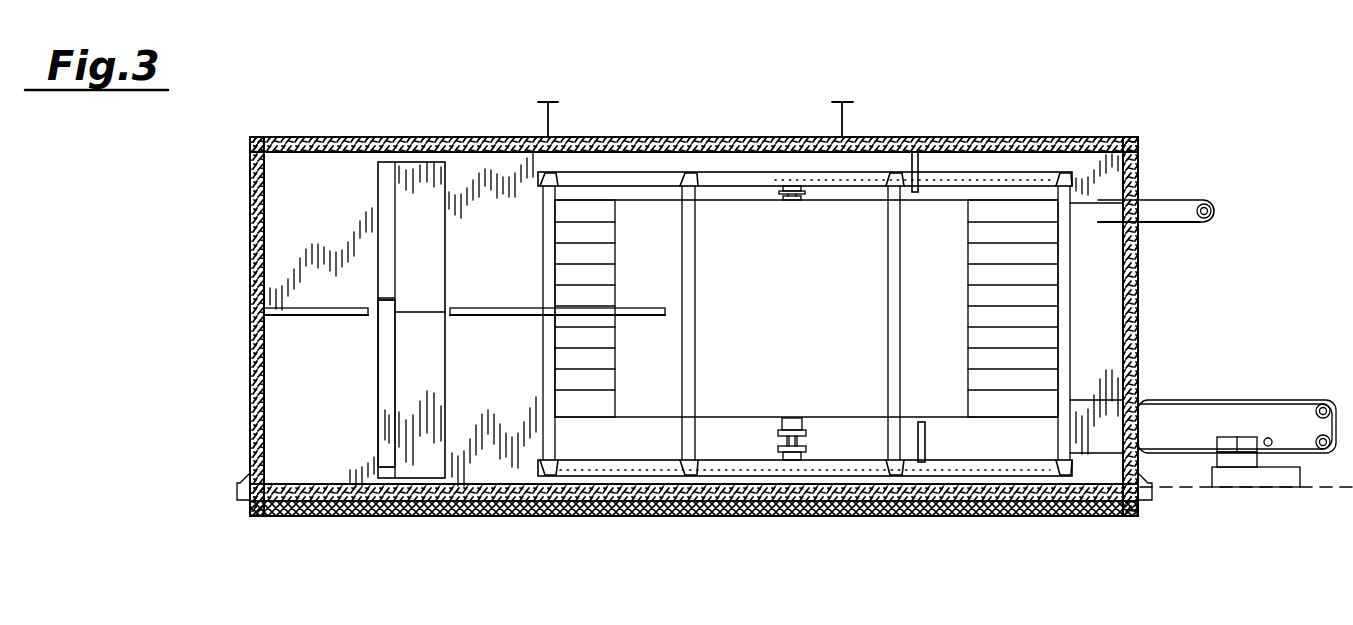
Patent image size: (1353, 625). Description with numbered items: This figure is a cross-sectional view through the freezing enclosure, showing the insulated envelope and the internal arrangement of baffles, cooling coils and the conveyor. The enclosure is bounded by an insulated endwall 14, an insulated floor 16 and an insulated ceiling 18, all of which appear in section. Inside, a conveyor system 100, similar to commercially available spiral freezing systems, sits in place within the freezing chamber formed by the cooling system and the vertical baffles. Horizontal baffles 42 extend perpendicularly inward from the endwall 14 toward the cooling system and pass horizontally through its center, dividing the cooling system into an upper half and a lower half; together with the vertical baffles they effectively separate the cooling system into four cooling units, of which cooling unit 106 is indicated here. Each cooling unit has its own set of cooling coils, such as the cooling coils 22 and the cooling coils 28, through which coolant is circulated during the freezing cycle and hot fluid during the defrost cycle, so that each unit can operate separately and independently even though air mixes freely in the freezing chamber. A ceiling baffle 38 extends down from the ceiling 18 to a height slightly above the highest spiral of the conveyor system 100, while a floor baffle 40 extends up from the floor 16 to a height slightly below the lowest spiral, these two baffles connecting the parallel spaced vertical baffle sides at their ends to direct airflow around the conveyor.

The insulated endwall 14 is at (250, 160).
The insulated floor 16 is at (603, 517).
The insulated ceiling 18 is at (643, 140).
The cooling coils 22 is at (415, 195).
The cooling coils 28 is at (413, 463).
The ceiling baffle 38 is at (920, 158).
The floor baffle 40 is at (922, 463).
The horizontal baffle 42 is at (307, 318).
The conveyor system 100 is at (791, 315).
The cooling unit 106 is at (318, 422).